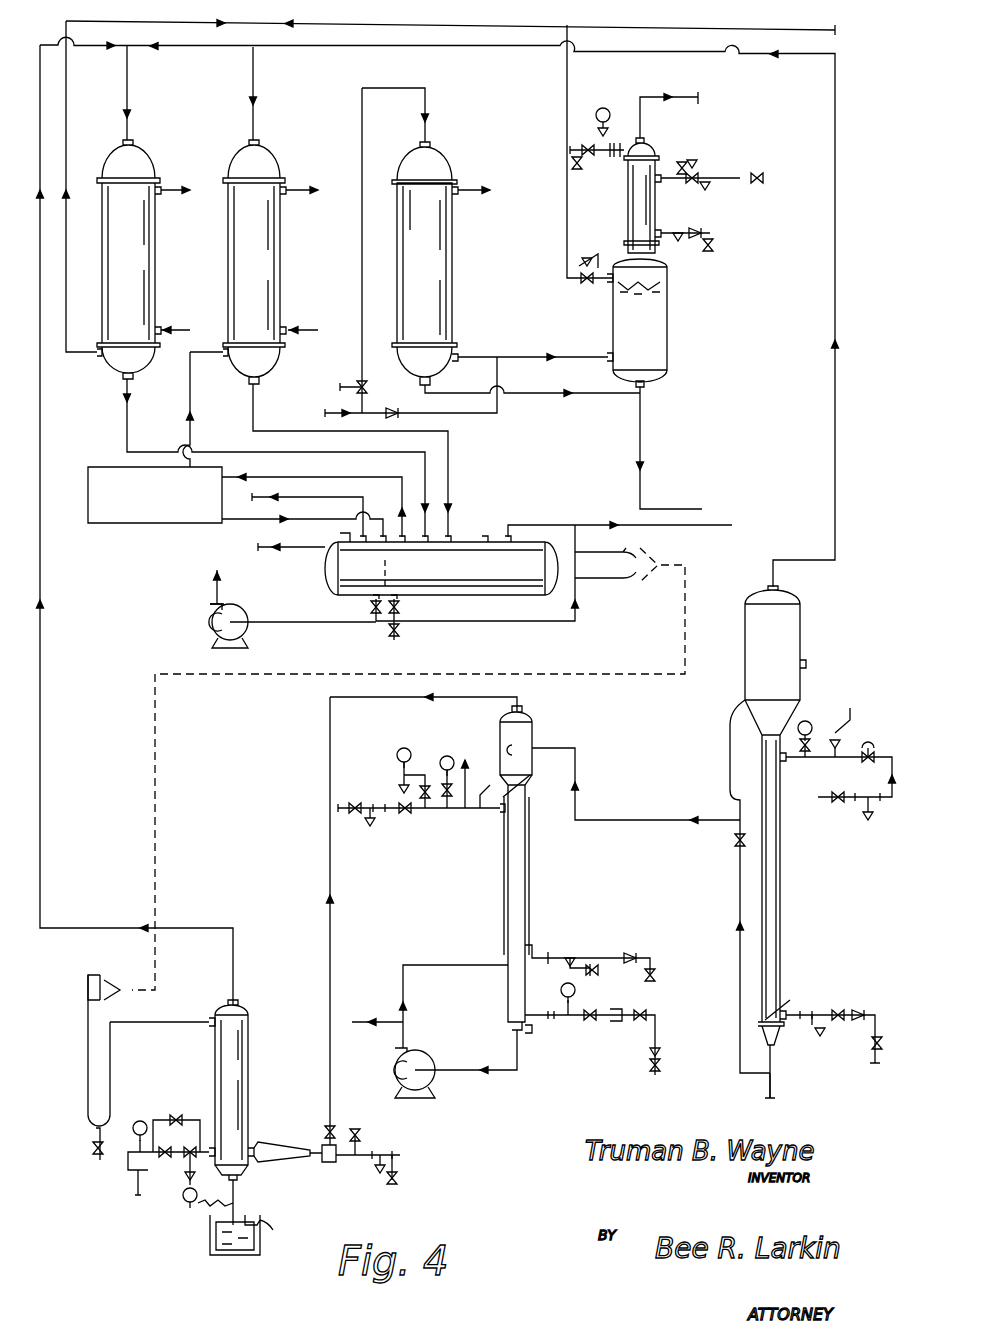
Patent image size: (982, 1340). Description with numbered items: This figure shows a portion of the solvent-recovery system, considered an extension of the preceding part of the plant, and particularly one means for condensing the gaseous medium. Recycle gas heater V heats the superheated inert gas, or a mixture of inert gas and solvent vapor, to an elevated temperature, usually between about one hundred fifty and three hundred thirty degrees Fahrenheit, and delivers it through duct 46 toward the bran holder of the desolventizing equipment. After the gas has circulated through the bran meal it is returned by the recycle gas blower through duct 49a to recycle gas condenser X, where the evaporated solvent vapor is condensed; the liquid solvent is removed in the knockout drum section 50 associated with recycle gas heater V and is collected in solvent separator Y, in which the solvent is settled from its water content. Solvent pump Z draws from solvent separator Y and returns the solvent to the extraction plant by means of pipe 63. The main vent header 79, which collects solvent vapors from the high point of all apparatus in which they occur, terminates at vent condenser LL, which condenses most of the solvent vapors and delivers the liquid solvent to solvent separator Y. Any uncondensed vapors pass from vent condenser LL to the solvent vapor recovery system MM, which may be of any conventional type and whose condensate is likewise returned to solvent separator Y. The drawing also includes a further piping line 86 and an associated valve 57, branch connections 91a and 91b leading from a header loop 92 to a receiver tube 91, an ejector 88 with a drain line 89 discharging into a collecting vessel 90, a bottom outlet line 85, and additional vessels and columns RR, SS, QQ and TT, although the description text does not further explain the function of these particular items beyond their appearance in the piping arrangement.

The main vent header 79 is at (408, 18).
The recycle line 86 is at (330, 50).
The duct 46 is at (660, 88).
The duct 49a is at (362, 258).
The control valve 57 is at (590, 154).
The knockout drum section 50 is at (652, 340).
The solvent pipe 63 is at (217, 580).
The connecting line a 91a is at (640, 546).
The connecting line b 91b is at (600, 580).
The header loop line 92 is at (455, 630).
The receiver tube 91 is at (110, 1070).
The ejector 88 is at (275, 1140).
The drain line 89 is at (236, 1190).
The collecting vessel 90 is at (208, 1245).
The bottom outlet line 85 is at (775, 1087).
The vessel RR is at (140, 255).
The vent condenser LL is at (258, 268).
The recycle gas condenser X is at (452, 258).
The recycle gas heater V is at (628, 200).
The solvent vapor recovery system MM is at (155, 495).
The solvent separator Y is at (441, 586).
The solvent pump Z is at (209, 622).
The column SS is at (525, 870).
The column QQ is at (780, 895).
The vessel TT is at (248, 1050).